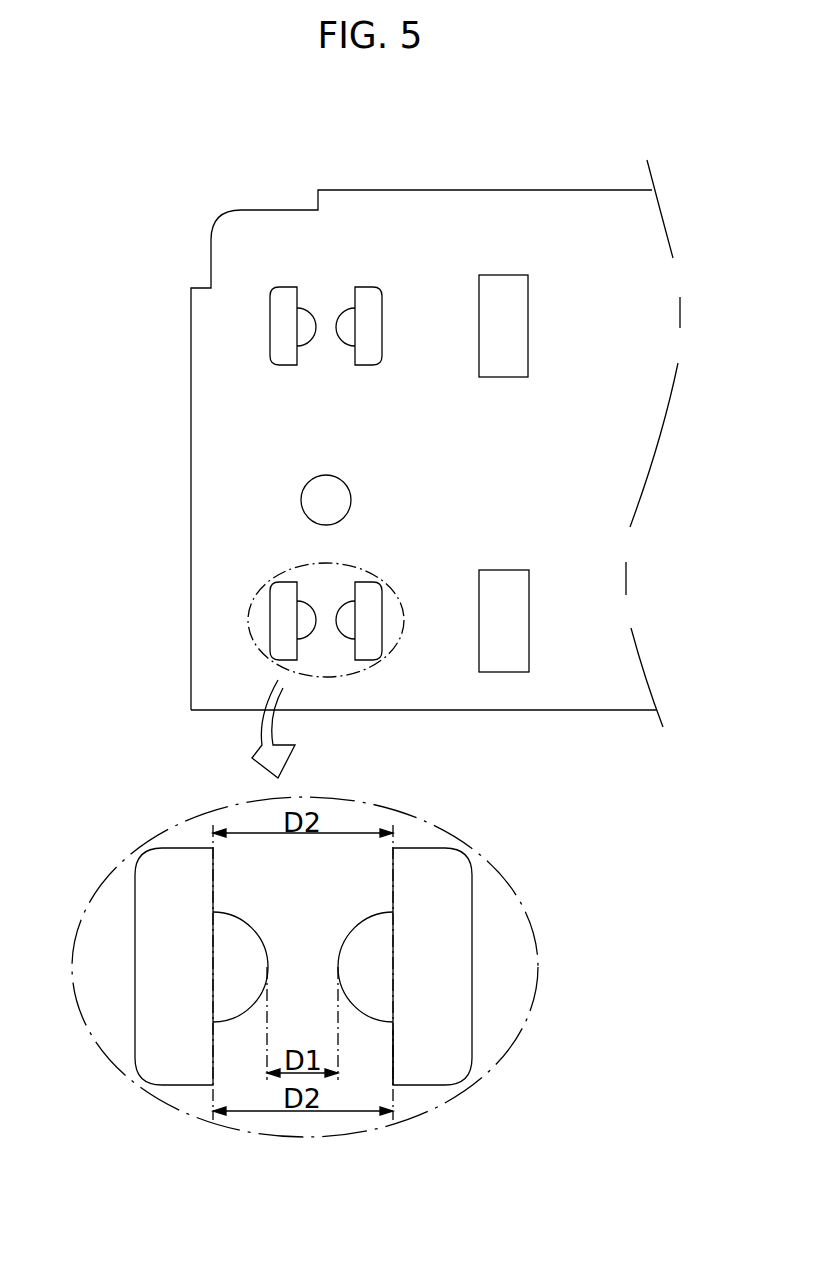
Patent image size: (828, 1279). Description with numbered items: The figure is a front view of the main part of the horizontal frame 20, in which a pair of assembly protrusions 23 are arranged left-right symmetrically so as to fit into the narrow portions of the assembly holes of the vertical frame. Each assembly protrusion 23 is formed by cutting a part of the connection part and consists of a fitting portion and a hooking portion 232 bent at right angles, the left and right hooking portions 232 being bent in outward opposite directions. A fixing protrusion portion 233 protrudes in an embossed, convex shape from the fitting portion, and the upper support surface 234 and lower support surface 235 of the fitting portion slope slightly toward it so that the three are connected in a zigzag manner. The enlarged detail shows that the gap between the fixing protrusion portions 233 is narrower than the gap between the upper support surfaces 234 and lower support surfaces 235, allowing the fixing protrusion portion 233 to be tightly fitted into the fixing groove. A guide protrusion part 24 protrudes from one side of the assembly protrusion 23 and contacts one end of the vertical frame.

The horizontal frame 20 is at (202, 208).
The assembly protrusion 23 is at (408, 578).
The guide protrusion part 24 is at (510, 318).
The hooking portion 232 is at (378, 323).
The fixing protrusion portion 233 is at (347, 325).
The upper support surface 234 is at (393, 880).
The lower support surface 235 is at (393, 1052).